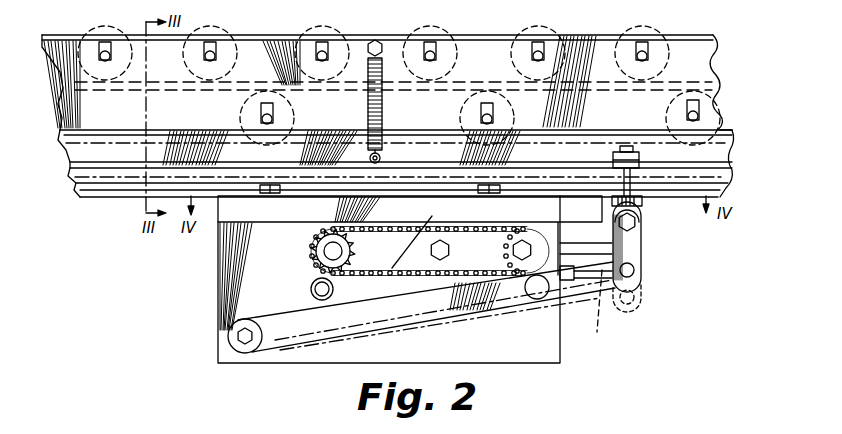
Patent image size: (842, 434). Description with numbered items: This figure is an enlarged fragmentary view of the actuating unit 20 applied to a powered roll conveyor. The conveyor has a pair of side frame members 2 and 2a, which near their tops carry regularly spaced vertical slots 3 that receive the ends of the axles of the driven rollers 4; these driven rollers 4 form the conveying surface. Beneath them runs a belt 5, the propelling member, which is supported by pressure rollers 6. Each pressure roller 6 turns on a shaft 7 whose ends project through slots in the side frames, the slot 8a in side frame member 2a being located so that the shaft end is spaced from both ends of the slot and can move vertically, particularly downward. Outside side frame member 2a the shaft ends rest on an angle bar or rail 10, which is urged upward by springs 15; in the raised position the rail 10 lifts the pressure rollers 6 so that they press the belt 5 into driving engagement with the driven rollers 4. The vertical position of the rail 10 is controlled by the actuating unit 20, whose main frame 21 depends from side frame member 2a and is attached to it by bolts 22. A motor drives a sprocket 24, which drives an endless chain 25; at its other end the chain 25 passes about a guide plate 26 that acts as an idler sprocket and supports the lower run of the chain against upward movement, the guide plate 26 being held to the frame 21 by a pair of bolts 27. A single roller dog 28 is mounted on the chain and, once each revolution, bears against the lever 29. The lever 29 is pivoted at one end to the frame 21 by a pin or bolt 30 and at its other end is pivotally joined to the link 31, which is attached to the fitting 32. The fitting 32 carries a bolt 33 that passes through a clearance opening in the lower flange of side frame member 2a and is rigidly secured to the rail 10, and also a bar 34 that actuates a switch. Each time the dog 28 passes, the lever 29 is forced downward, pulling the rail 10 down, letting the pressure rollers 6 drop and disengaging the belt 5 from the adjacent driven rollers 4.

The side frame member 2 is at (724, 23).
The side frame member 2a is at (717, 46).
The vertical slots 3 is at (640, 44).
The driven rollers 4 is at (547, 34).
The belt 5 is at (602, 34).
The pressure rollers 6 is at (666, 107).
The shaft 7 is at (262, 119).
The slot 8a is at (700, 106).
The rail 10 is at (133, 170).
The springs 15 is at (384, 108).
The actuating unit 20 is at (210, 323).
The main frame 21 is at (218, 262).
The bolts 22 is at (478, 185).
The sprocket 24 is at (351, 258).
The endless chain 25 is at (313, 246).
The guide plate 26 is at (409, 228).
The bolts 27 is at (522, 240).
The roller dog 28 is at (311, 290).
The lever 29 is at (424, 315).
The pin or bolt 30 is at (245, 347).
The link 31 is at (642, 263).
The fitting 32 is at (641, 210).
The bolt 33 is at (624, 173).
The bar 34 is at (600, 232).